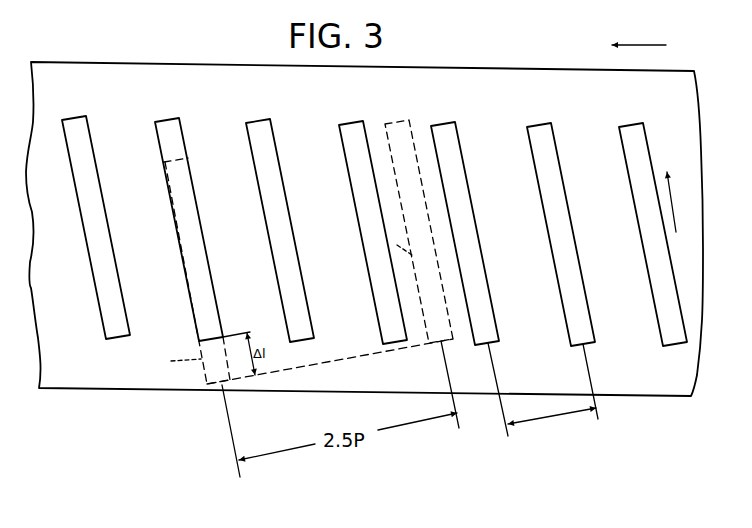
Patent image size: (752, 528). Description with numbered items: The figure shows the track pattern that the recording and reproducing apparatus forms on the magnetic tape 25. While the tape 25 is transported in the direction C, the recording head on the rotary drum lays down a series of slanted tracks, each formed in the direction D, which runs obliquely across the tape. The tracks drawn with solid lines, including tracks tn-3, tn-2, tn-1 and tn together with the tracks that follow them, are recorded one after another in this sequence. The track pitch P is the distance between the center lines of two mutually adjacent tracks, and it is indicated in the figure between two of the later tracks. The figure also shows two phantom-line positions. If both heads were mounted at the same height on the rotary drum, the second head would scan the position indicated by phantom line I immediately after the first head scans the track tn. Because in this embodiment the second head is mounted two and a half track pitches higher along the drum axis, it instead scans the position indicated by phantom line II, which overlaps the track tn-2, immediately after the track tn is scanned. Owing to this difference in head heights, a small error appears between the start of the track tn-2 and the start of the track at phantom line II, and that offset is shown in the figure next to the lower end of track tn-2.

The tape 25 is at (702, 150).
The track tn-3 is at (86, 118).
The track tn-2 is at (179, 119).
The track tn-1 is at (270, 121).
The track tn is at (356, 122).
The track pitch P is at (543, 392).
The tape transport direction C is at (647, 47).
The track forming direction D is at (679, 202).
The phantom line I is at (400, 240).
The phantom line II is at (177, 363).